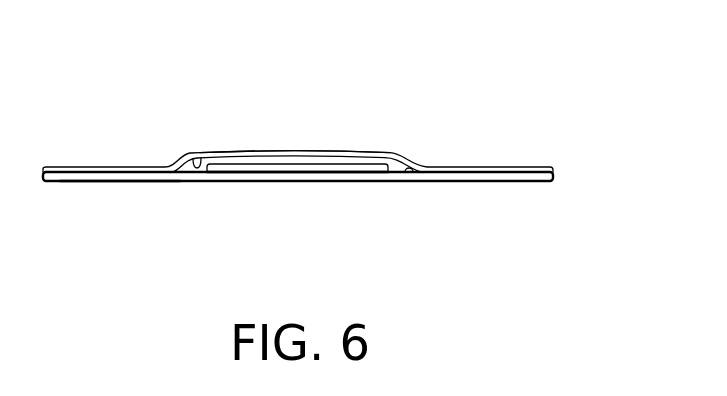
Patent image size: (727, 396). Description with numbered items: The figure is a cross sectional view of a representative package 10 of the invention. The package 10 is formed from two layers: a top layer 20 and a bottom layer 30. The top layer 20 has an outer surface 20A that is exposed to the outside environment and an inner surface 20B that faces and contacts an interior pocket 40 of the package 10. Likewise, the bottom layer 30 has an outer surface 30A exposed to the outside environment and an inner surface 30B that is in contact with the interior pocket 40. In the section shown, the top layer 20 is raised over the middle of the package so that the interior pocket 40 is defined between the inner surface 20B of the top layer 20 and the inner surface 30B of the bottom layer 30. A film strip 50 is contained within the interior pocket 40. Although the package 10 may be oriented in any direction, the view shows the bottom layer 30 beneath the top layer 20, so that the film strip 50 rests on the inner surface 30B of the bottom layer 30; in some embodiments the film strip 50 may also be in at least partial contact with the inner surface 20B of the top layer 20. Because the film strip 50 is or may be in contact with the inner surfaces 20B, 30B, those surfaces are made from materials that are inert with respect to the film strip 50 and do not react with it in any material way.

The package 10 is at (333, 145).
The top layer 20 is at (298, 121).
The outer surface of top layer 20A is at (308, 151).
The inner surface of top layer 20B is at (192, 152).
The bottom layer 30 is at (298, 213).
The outer surface of bottom layer 30A is at (188, 183).
The inner surface of bottom layer 30B is at (415, 178).
The interior pocket 40 is at (397, 175).
The film strip 50 is at (291, 176).